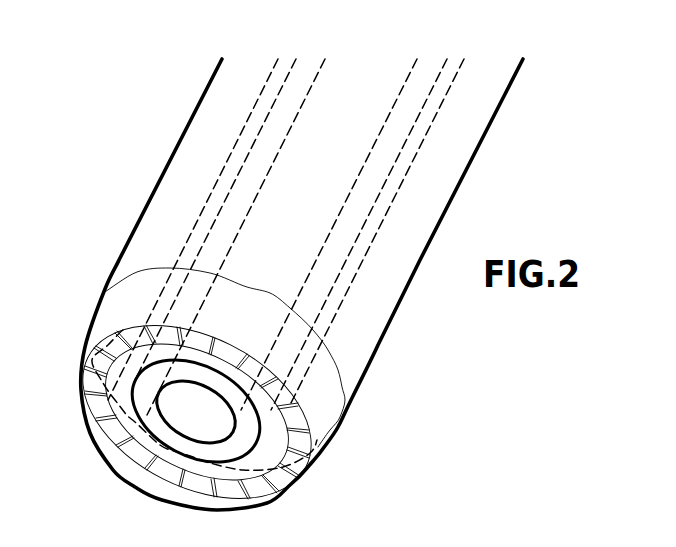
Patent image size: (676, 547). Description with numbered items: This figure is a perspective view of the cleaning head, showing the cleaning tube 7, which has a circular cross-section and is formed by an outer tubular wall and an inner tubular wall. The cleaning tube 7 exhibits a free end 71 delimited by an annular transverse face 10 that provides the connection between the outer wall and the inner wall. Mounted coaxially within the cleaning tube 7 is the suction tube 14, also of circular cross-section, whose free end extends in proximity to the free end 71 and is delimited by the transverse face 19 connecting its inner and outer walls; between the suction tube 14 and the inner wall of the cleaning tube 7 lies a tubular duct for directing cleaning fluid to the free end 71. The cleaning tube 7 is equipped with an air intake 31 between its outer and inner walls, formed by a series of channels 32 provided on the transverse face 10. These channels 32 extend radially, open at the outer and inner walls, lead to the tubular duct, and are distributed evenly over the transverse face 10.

The cleaning tube 7 is at (356, 360).
The free end of the cleaning tube 71 is at (320, 430).
The annular transverse face 10 is at (157, 483).
The channels 32 is at (250, 489).
The suction tube 14 is at (127, 393).
The transverse face 19 is at (153, 423).
The air intake 31 is at (525, 546).